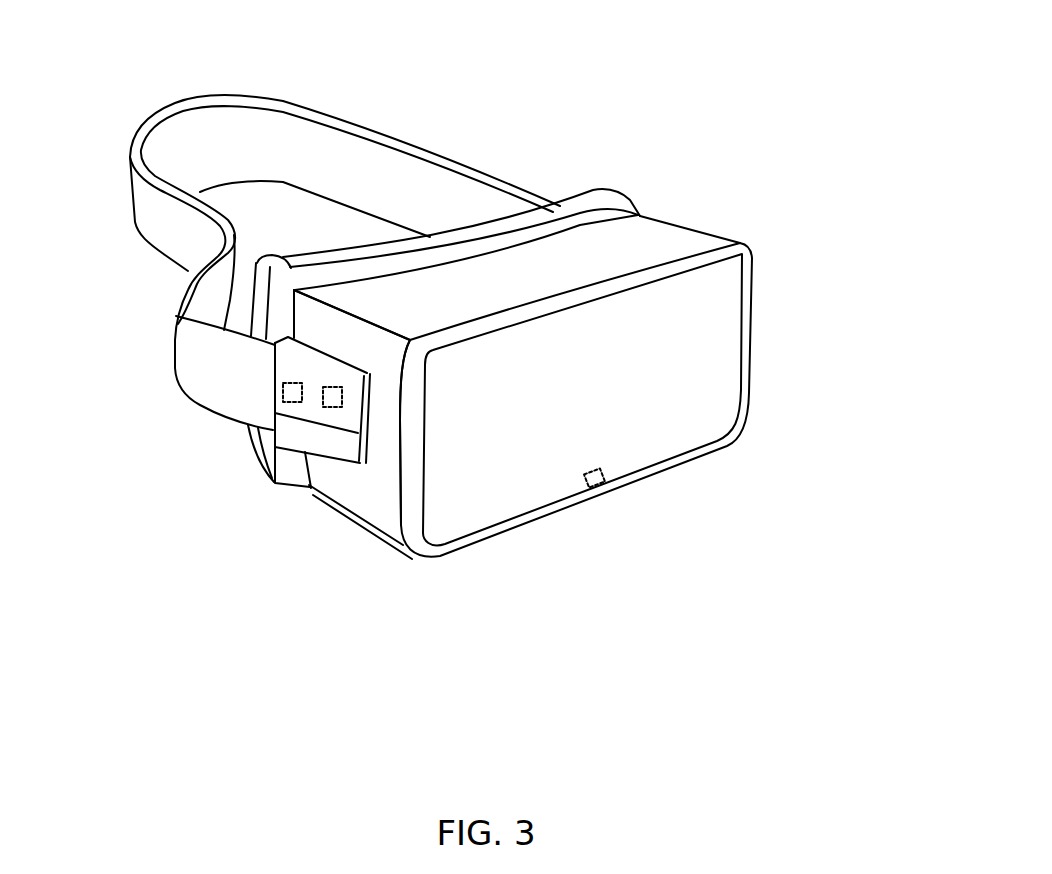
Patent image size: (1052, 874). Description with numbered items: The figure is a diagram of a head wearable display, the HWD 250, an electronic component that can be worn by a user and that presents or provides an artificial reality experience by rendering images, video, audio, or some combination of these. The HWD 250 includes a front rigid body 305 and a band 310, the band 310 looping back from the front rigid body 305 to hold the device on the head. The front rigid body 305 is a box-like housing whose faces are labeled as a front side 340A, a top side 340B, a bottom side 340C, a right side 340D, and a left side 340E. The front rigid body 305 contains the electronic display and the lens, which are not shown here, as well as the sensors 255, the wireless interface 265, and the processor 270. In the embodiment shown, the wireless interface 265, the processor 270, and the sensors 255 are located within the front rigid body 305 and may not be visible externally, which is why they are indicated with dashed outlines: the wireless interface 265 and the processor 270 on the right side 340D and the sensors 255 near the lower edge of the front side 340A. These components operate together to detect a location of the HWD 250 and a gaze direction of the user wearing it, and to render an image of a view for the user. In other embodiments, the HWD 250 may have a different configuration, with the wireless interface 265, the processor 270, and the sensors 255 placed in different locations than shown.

The head wearable display 250 is at (55, 36).
The band 310 is at (447, 158).
The front rigid body 305 is at (748, 244).
The front side 340A is at (664, 432).
The top side 340B is at (362, 292).
The bottom side 340C is at (328, 530).
The right side 340D is at (374, 500).
The left side 340E is at (719, 222).
The wireless interface 265 is at (268, 389).
The processor 270 is at (310, 420).
The sensors 255 is at (602, 502).